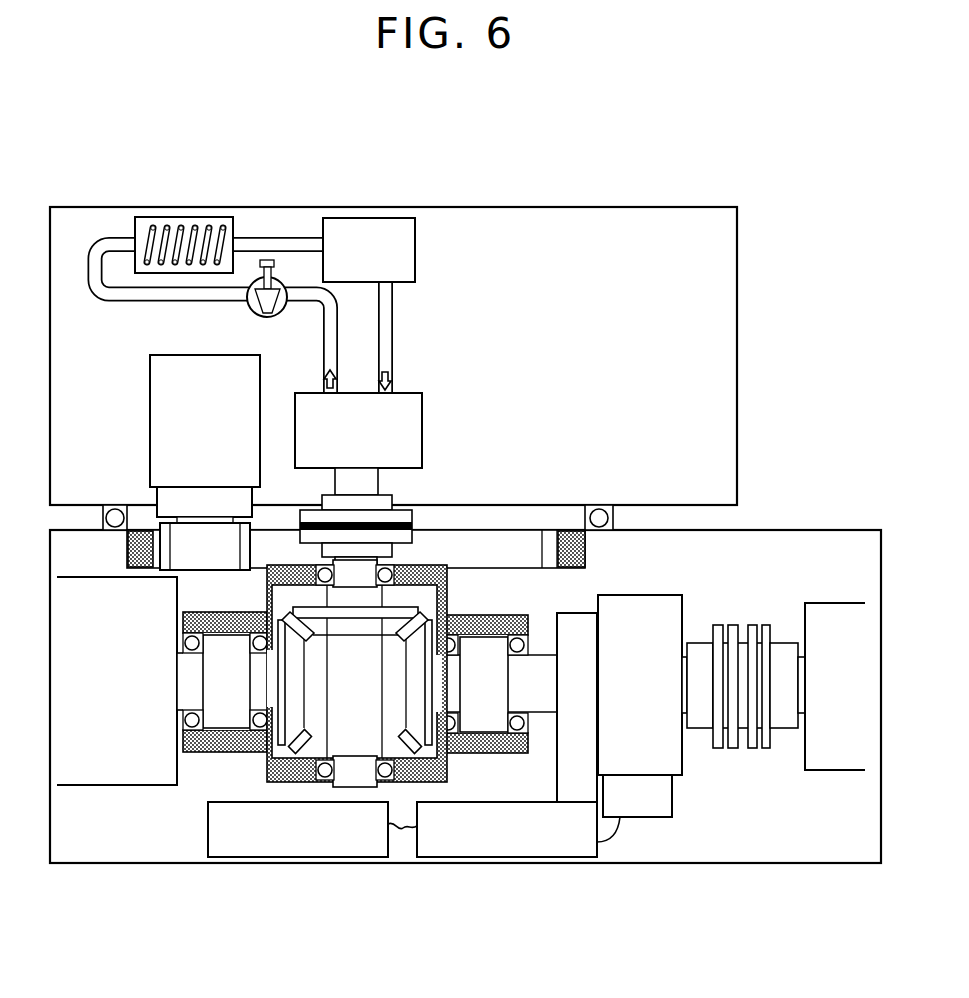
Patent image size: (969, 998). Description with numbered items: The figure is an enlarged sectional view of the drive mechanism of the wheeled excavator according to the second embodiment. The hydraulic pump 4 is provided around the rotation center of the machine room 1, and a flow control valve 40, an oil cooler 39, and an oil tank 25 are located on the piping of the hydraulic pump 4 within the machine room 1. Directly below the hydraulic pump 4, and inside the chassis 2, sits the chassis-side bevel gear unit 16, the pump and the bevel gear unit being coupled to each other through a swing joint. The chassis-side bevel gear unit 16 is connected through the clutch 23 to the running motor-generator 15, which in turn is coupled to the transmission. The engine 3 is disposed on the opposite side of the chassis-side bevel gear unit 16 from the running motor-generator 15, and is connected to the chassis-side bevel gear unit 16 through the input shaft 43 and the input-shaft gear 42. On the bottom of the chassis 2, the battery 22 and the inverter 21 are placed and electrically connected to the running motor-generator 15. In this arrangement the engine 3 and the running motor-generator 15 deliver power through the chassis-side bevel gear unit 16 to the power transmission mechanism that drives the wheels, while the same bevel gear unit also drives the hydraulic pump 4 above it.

The machine room 1 is at (80, 210).
The chassis 2 is at (833, 852).
The engine 3 is at (142, 777).
The hydraulic pump 4 is at (403, 403).
The running motor-generator 15 is at (673, 767).
The chassis-side bevel gear unit 16 is at (498, 753).
The inverter 21 is at (447, 848).
The battery 22 is at (347, 852).
The clutch 23 is at (563, 748).
The oil tank 25 is at (380, 227).
The oil cooler 39 is at (207, 218).
The flow control valve 40 is at (270, 257).
The input-shaft gear 42 is at (295, 747).
The input shaft 43 is at (227, 708).